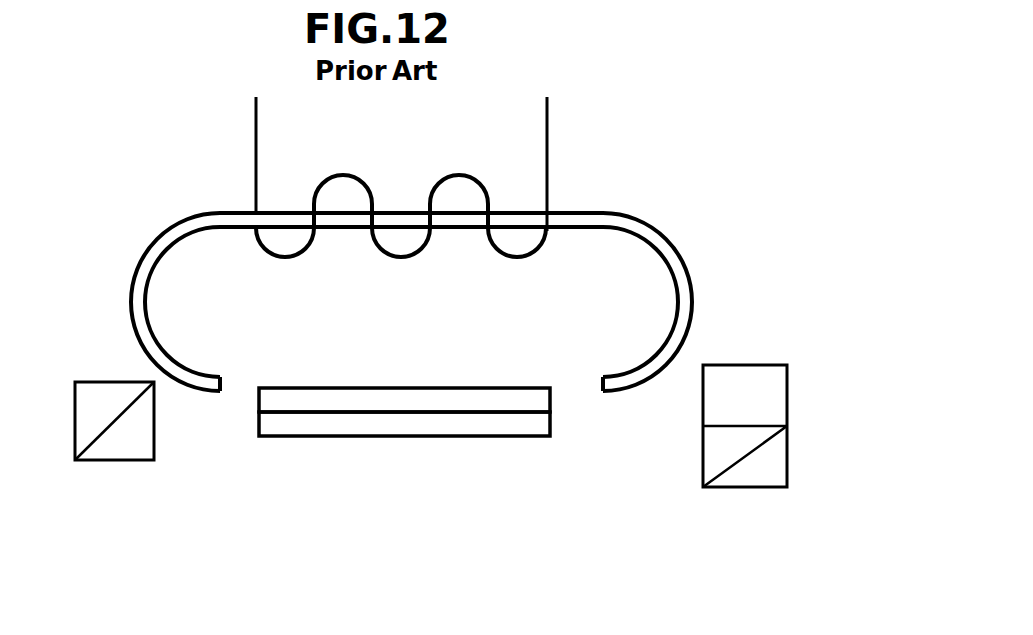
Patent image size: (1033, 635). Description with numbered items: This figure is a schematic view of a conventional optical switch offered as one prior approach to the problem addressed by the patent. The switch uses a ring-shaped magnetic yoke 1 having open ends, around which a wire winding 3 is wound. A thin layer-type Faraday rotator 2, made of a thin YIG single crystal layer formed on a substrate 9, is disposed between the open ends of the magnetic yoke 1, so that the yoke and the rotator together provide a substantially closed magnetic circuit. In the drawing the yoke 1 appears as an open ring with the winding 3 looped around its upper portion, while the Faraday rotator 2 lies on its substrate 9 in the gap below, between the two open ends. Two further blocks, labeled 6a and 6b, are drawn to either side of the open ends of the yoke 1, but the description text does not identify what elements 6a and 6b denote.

The magnetic yoke 1 is at (163, 232).
The wire winding 3 is at (547, 195).
The Faraday rotator 2 is at (385, 398).
The substrate 9 is at (373, 423).
The magnet 6a is at (130, 450).
The magnet 6b is at (780, 465).